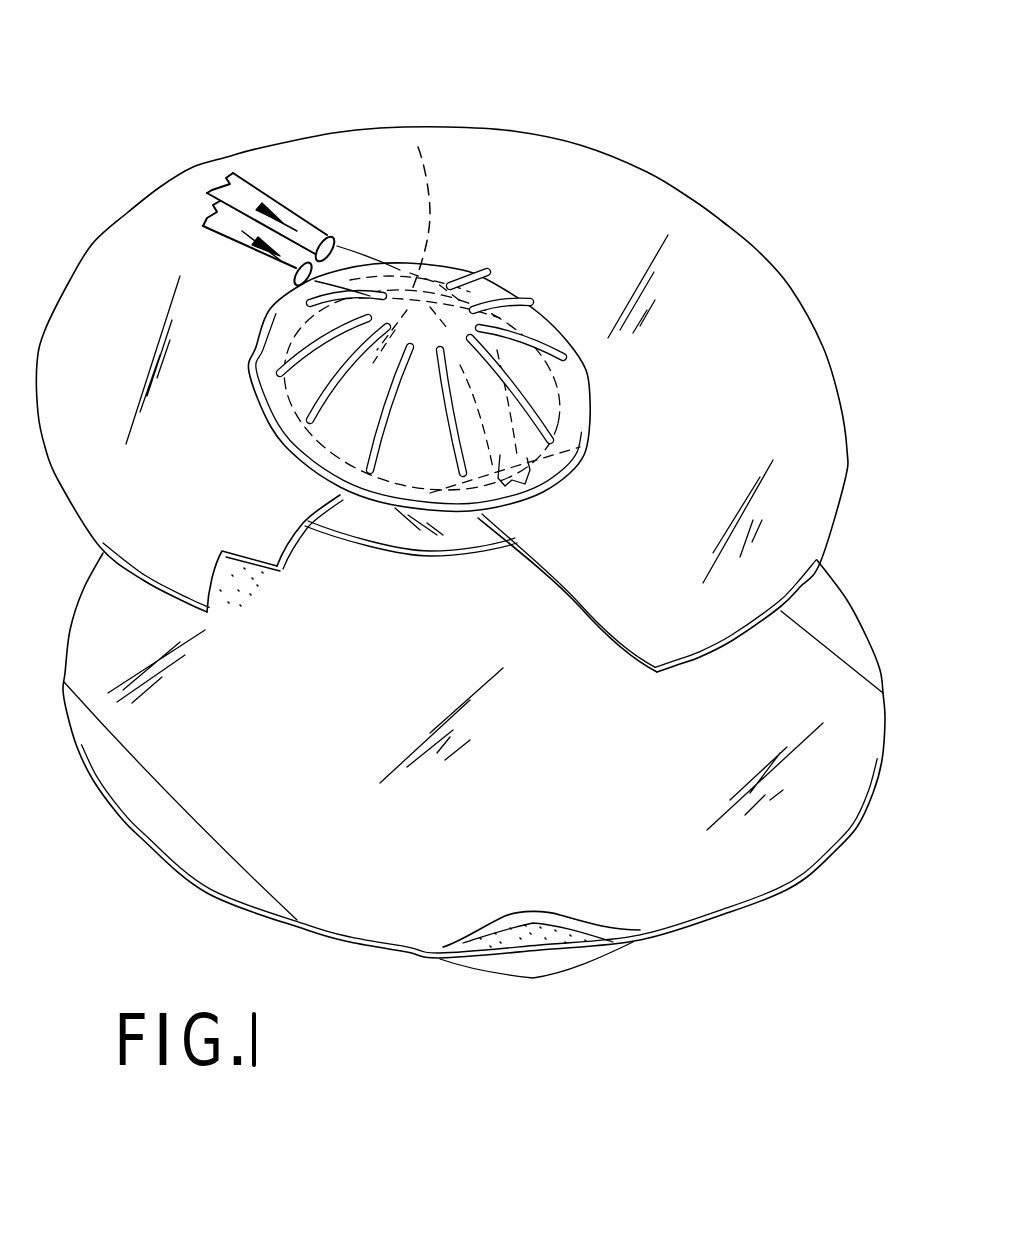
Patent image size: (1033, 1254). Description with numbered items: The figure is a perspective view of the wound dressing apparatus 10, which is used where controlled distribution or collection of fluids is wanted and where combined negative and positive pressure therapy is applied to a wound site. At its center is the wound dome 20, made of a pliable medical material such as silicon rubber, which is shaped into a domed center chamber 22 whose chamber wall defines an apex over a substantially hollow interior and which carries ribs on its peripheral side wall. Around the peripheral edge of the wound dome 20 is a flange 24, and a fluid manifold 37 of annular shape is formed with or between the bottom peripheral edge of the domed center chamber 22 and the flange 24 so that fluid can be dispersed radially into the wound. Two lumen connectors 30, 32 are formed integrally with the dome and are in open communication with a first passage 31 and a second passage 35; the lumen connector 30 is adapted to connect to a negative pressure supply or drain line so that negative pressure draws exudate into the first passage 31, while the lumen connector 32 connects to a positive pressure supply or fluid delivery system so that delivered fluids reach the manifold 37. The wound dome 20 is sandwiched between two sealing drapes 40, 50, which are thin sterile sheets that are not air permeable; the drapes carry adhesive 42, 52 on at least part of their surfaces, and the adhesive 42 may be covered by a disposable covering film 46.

The wound dressing apparatus 10 is at (696, 134).
The wound dome 20 is at (483, 268).
The domed center chamber 22 is at (538, 328).
The flange 24 is at (383, 527).
The lumen connector 30 is at (350, 248).
The first passage 31 is at (415, 134).
The lumen connector 32 is at (340, 290).
The second passage 35 is at (335, 406).
The fluid manifold 37 is at (530, 460).
The sealing drape 40 is at (753, 837).
The adhesive 42 is at (527, 940).
The disposable covering film 46 is at (540, 960).
The sealing drape 50 is at (723, 310).
The adhesive 52 is at (233, 587).